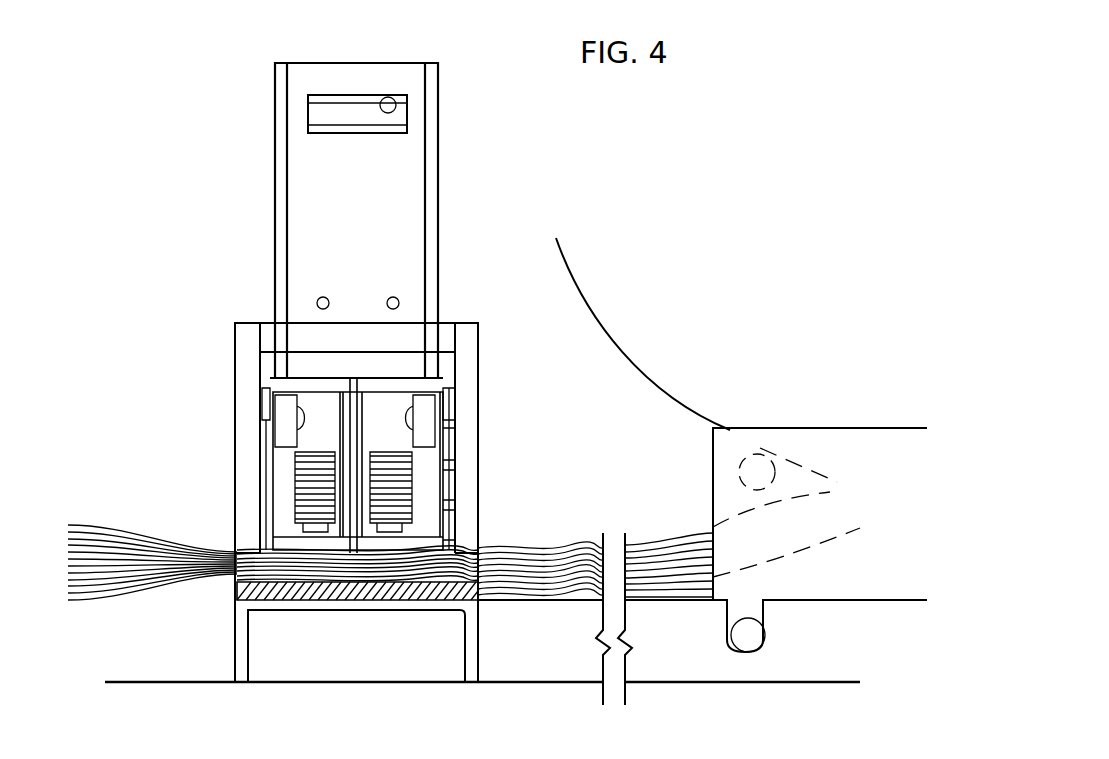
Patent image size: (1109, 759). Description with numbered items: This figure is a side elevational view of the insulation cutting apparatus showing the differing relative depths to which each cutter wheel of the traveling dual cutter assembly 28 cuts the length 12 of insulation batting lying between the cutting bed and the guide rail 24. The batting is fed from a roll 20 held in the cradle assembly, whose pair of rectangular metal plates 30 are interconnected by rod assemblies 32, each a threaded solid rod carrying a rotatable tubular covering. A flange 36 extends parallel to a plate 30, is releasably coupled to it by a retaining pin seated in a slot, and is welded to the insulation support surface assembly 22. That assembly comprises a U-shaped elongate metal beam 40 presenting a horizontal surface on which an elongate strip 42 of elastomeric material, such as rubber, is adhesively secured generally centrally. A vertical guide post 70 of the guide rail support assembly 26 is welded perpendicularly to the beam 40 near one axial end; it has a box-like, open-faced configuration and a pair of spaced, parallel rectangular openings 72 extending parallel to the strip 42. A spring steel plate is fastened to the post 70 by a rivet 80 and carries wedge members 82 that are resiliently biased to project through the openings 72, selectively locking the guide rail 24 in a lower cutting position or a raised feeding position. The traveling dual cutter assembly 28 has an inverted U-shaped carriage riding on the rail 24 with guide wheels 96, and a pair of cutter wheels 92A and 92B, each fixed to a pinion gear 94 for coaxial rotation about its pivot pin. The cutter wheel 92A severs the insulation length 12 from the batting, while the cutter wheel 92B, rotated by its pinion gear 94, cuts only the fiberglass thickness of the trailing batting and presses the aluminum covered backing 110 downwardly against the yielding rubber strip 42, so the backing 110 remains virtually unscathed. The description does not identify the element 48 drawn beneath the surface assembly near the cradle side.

The length of insulation batting 12 is at (98, 552).
The roll 20 is at (640, 348).
The insulation support surface assembly 22 is at (225, 626).
The guide rail 24 is at (400, 385).
The guide rail support assembly 26 is at (262, 218).
The traveling dual cutter assembly 28 is at (248, 360).
The rectangular metal plate 30 is at (862, 440).
The rod assembly 32 is at (752, 472).
The flange 36 is at (678, 665).
The U-shaped elongate metal beam 40 is at (468, 628).
The elongate strip of elastomeric material 42 is at (328, 585).
The roller 48 is at (750, 636).
The vertical guide post 70 is at (414, 183).
The rectangular opening 72 is at (403, 97).
The rivet 80 is at (318, 298).
The wedge member 82 is at (318, 112).
The cutter wheel 92A is at (283, 432).
The cutter wheel 92B is at (448, 430).
The pinion gear 94 is at (392, 462).
The guide wheel 96 is at (258, 437).
The aluminum covered backing 110 is at (513, 590).